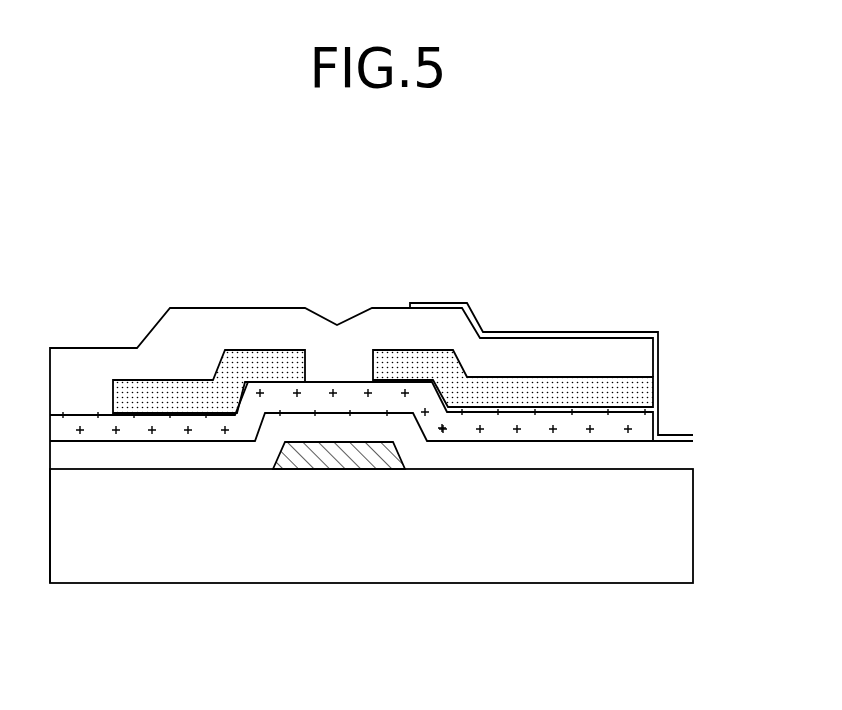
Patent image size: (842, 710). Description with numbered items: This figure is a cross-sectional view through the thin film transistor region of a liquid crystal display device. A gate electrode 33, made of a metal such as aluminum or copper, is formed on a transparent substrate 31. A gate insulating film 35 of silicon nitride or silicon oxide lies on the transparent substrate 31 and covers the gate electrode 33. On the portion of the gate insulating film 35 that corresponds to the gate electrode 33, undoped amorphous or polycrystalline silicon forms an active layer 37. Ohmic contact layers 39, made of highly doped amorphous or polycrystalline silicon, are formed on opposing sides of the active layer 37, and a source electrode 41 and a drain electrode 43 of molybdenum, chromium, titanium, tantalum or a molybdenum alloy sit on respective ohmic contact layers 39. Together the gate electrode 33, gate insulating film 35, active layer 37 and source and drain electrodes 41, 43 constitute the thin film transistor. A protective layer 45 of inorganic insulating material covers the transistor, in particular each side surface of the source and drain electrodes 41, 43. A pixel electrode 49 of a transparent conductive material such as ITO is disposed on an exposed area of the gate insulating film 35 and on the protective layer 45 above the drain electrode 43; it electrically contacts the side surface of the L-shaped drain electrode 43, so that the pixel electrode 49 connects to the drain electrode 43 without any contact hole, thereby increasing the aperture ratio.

The transparent substrate 31 is at (678, 535).
The gate electrode 33 is at (340, 469).
The gate insulating film 35 is at (670, 450).
The active layer 37 is at (345, 397).
The ohmic contact layers 39 is at (407, 383).
The source electrode 41 is at (225, 357).
The drain electrode 43 is at (513, 410).
The protective layer 45 is at (100, 352).
The pixel electrode 49 is at (608, 332).